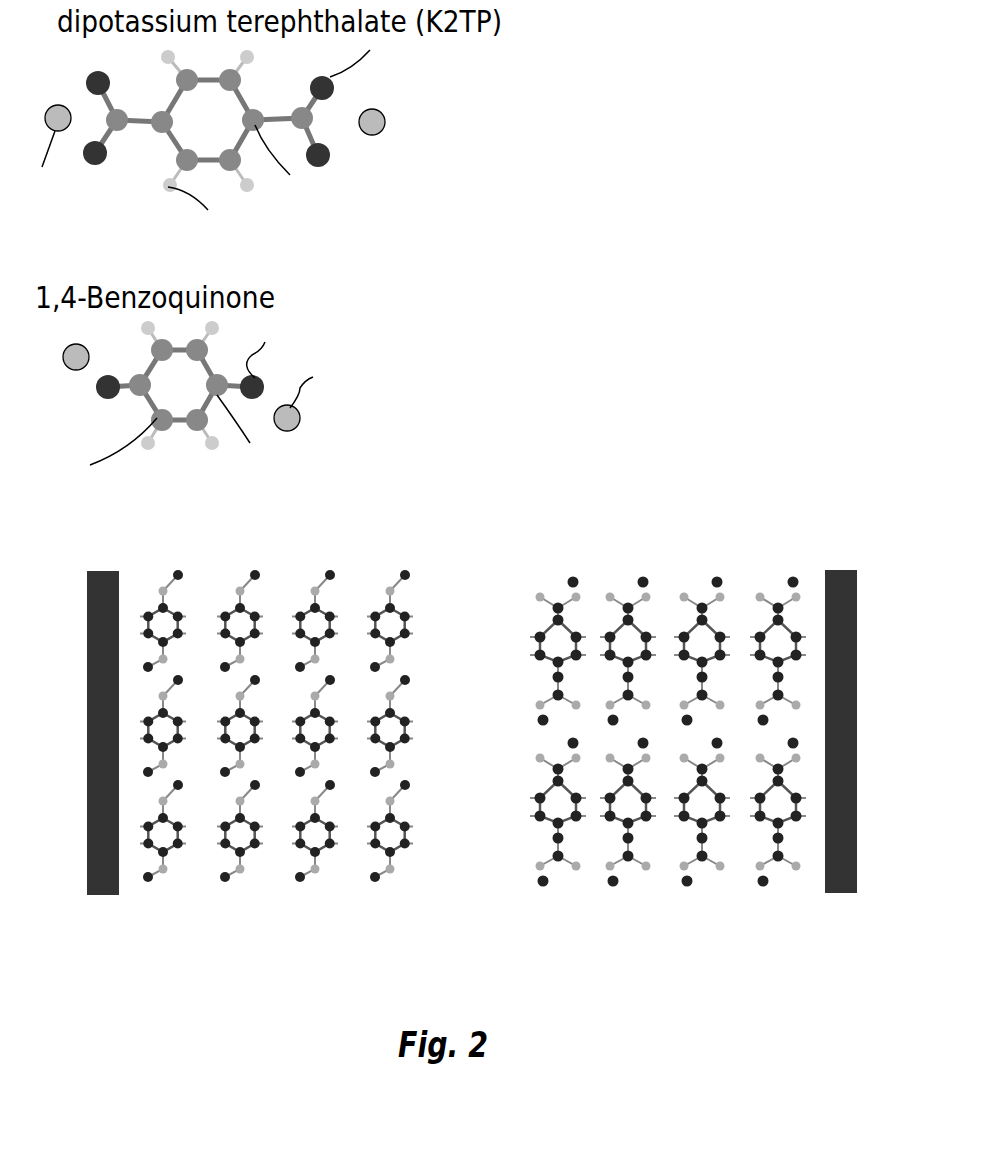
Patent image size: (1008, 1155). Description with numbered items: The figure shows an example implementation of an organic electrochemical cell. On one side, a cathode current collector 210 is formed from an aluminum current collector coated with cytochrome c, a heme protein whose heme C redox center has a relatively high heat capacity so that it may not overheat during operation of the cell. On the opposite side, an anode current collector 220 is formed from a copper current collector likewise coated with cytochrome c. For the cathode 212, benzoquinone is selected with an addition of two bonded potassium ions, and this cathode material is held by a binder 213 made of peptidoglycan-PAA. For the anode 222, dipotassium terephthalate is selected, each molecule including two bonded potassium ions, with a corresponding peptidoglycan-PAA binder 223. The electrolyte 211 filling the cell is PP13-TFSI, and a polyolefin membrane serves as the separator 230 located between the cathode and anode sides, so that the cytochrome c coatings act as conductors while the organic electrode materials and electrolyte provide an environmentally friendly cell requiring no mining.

The cathode current collector 210 is at (107, 867).
The electrolyte 211 is at (262, 868).
The cathode 212 is at (415, 412).
The binder 213 is at (207, 838).
The anode current collector 220 is at (833, 865).
The anode 222 is at (462, 108).
The binder 223 is at (725, 593).
The separator 230 is at (495, 828).